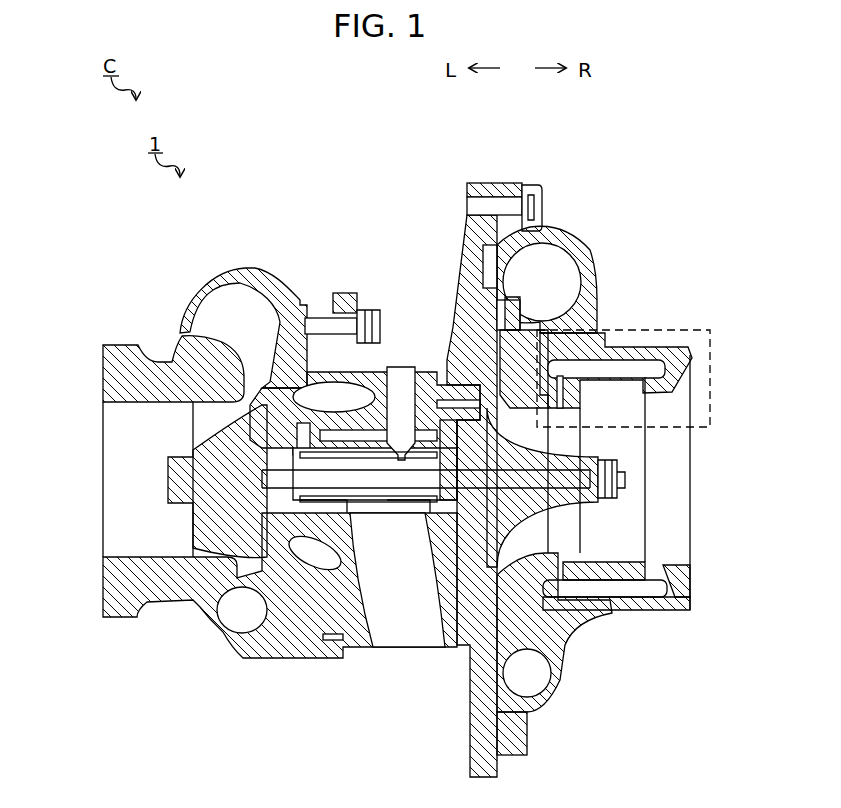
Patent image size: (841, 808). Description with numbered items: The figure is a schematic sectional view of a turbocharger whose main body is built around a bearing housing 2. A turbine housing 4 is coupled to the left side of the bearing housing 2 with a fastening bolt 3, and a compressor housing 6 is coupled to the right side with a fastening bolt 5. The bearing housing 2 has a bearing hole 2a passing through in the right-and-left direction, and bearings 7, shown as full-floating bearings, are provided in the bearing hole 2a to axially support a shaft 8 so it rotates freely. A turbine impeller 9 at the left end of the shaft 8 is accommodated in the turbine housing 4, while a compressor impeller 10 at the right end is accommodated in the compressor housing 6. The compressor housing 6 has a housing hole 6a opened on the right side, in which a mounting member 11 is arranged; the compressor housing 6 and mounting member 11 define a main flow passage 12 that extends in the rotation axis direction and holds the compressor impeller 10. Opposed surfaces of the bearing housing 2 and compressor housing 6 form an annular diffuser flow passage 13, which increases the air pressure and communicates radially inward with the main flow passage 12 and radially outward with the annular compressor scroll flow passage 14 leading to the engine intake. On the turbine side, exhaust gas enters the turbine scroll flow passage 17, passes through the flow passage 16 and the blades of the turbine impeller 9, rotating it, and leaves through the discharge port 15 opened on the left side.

The bearing housing 2 is at (291, 484).
The bearing hole 2a is at (400, 475).
The fastening bolt 3 is at (365, 300).
The turbine housing 4 is at (278, 282).
The fastening bolt 5 is at (531, 193).
The compressor housing 6 is at (647, 350).
The housing hole 6a is at (687, 352).
The bearings 7 is at (393, 498).
The shaft 8 is at (407, 500).
The turbine impeller 9 is at (233, 542).
The compressor impeller 10 is at (563, 452).
The mounting member 11 is at (678, 574).
The main flow passage 12 is at (630, 565).
The diffuser flow passage 13 is at (535, 320).
The compressor scroll flow passage 14 is at (562, 253).
The discharge port 15 is at (103, 452).
The flow passage 16 is at (247, 368).
The turbine scroll flow passage 17 is at (222, 302).